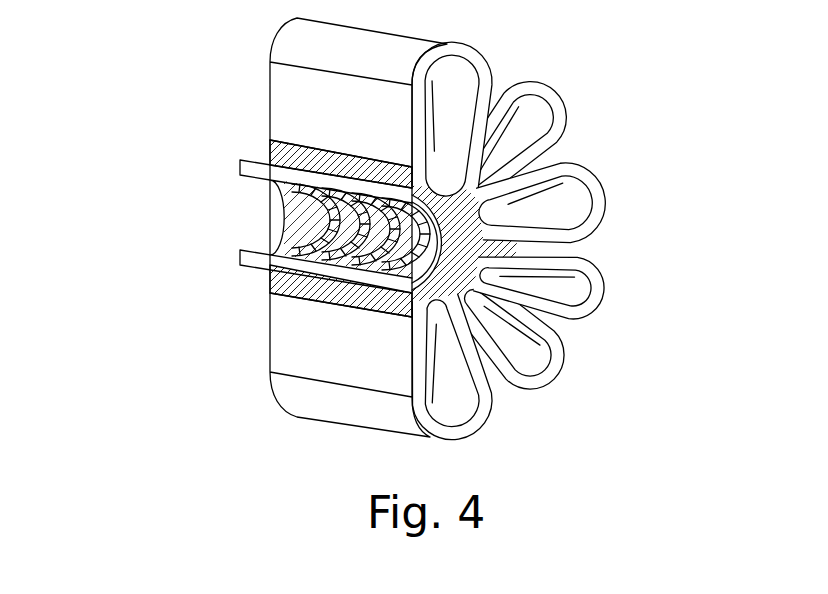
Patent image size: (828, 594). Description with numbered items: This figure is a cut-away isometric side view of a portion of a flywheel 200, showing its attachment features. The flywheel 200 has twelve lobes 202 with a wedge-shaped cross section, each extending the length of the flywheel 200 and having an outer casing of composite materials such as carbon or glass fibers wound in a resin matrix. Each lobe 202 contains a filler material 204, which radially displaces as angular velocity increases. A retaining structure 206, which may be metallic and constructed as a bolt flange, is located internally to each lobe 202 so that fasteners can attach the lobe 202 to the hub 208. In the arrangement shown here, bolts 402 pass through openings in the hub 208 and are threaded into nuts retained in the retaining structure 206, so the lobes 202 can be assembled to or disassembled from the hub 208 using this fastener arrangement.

The flywheel 200 is at (191, 429).
The lobe 202 is at (582, 170).
The filler material 204 is at (570, 279).
The retaining structure 206 is at (495, 210).
The hub 208 is at (280, 283).
The bolts 402 is at (282, 210).